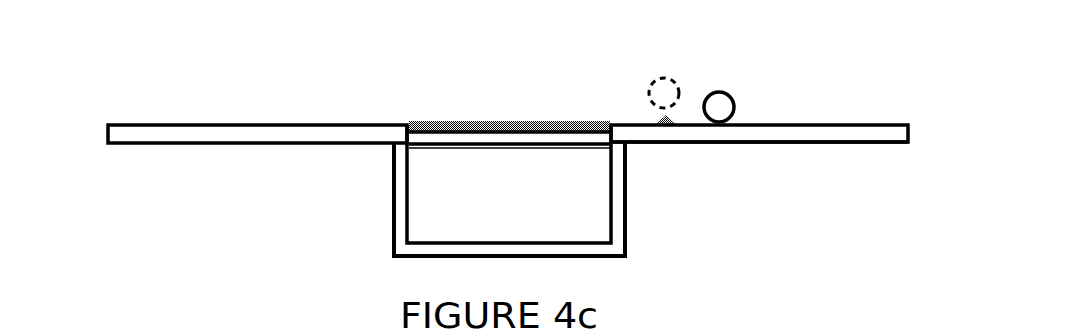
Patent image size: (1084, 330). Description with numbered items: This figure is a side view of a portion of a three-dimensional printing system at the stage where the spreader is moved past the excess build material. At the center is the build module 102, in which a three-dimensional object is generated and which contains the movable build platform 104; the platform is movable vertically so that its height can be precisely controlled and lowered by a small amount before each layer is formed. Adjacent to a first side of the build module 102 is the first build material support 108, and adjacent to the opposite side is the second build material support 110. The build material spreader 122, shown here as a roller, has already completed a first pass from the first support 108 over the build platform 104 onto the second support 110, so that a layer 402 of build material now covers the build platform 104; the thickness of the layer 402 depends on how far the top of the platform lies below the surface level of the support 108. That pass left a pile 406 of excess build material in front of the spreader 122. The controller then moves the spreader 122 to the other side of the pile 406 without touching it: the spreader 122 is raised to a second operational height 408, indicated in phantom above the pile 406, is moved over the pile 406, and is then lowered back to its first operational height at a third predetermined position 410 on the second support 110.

The build module 102 is at (390, 240).
The build platform 104 is at (420, 141).
The first build material support 108 is at (125, 125).
The second build material support 110 is at (893, 123).
The build material spreader 122 is at (720, 92).
The layer of build material 402 is at (420, 131).
The pile of excess build material 406 is at (658, 118).
The second operational height 408 is at (660, 79).
The third predetermined position 410 is at (720, 153).